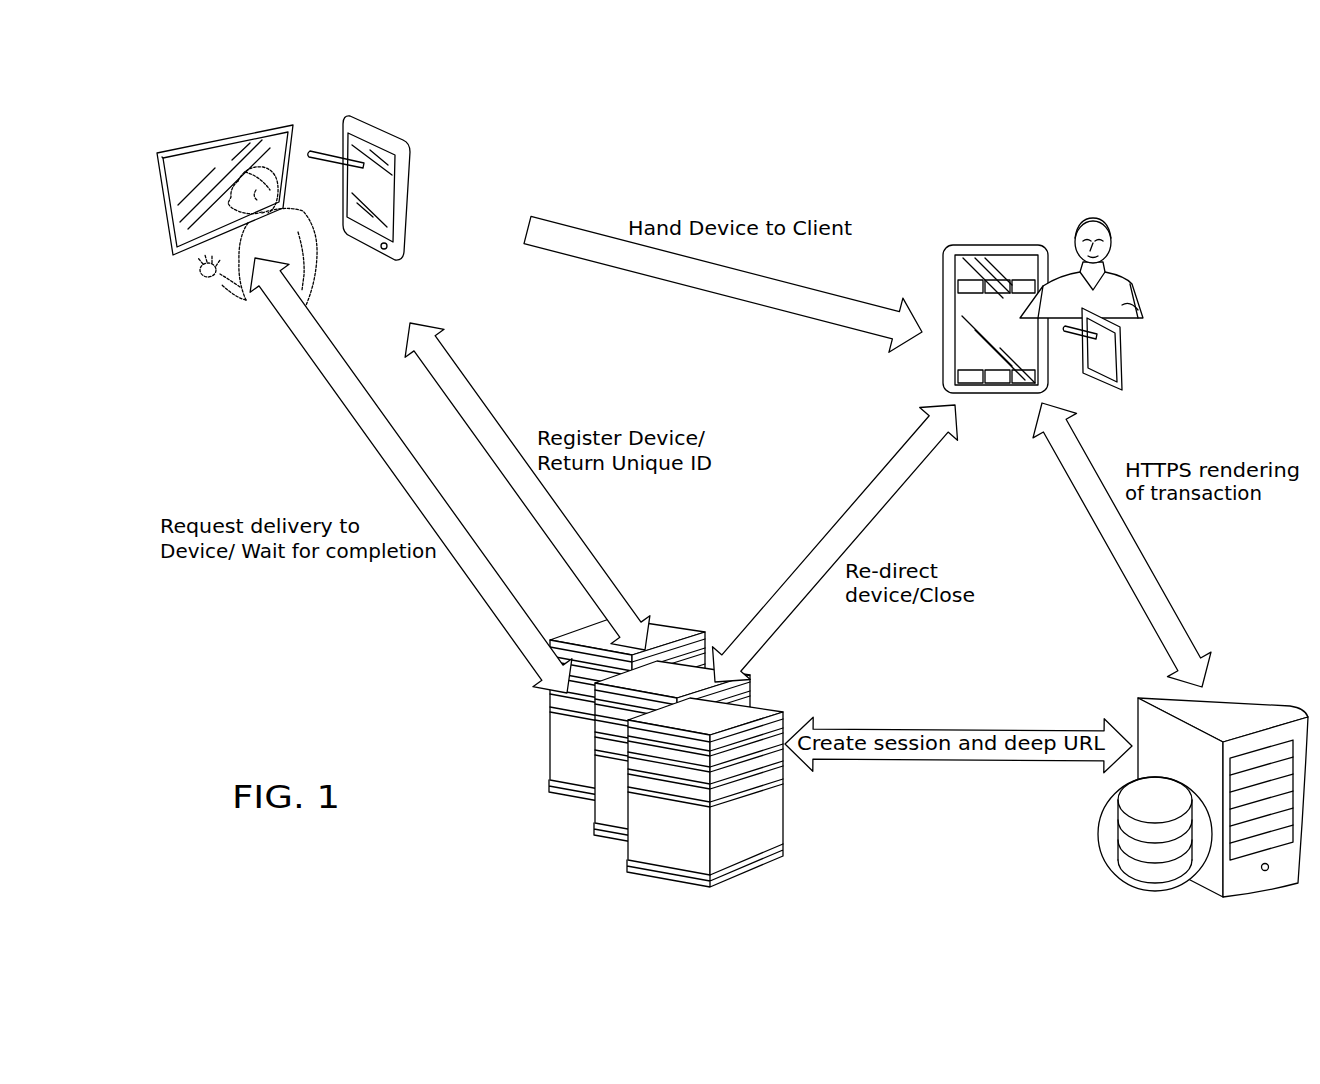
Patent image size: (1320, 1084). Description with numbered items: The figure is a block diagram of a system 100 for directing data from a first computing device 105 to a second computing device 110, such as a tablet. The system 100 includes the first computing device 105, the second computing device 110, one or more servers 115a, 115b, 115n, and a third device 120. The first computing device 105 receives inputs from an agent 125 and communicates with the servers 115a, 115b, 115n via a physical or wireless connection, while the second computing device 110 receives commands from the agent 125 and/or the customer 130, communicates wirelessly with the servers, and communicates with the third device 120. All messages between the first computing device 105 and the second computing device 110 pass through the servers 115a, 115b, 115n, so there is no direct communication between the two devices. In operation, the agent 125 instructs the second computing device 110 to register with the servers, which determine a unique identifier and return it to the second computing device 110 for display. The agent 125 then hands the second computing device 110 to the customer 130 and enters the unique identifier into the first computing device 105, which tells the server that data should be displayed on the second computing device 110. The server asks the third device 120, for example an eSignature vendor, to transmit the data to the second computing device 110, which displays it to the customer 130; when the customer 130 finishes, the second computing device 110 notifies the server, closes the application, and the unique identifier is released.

The system 100 is at (1186, 152).
The first computing device 105 is at (157, 209).
The second computing device 110 is at (412, 188).
The server 115a is at (785, 826).
The server 115b is at (750, 687).
The server 115n is at (681, 628).
The third device 120 is at (1262, 700).
The agent 125 is at (238, 303).
The customer 130 is at (1096, 220).